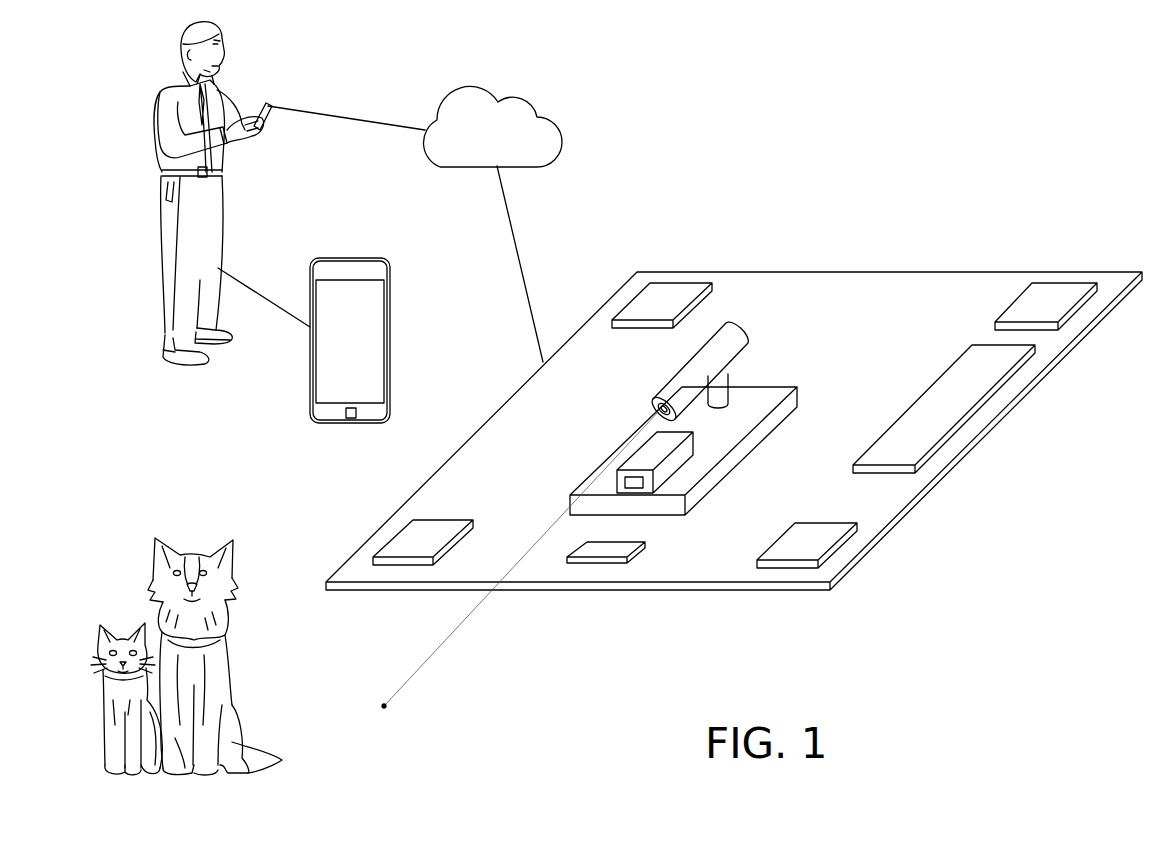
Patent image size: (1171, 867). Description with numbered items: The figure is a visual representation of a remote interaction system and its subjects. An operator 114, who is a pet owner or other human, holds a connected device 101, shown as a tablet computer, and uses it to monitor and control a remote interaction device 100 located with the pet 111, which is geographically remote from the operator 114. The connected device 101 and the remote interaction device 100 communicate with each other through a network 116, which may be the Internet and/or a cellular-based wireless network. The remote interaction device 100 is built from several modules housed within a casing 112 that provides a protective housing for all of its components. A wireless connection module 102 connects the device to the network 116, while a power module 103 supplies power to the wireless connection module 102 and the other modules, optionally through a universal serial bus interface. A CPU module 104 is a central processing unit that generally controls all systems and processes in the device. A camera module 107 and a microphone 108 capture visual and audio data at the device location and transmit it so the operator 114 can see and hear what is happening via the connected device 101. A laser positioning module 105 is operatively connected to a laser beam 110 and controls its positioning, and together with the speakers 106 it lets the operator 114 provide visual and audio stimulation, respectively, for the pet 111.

The remote interaction device 100 is at (716, 208).
The connected device 101 is at (392, 345).
The wireless connection module 102 is at (646, 300).
The power module 103 is at (1062, 298).
The CPU module 104 is at (918, 408).
The laser positioning module 105 is at (674, 389).
The speakers 106 is at (452, 525).
The camera module 107 is at (643, 483).
The microphone 108 is at (625, 552).
The laser beam 110 is at (384, 706).
The pet 111 is at (122, 565).
The casing 112 is at (802, 293).
The operator 114 is at (160, 88).
The network 116 is at (512, 104).